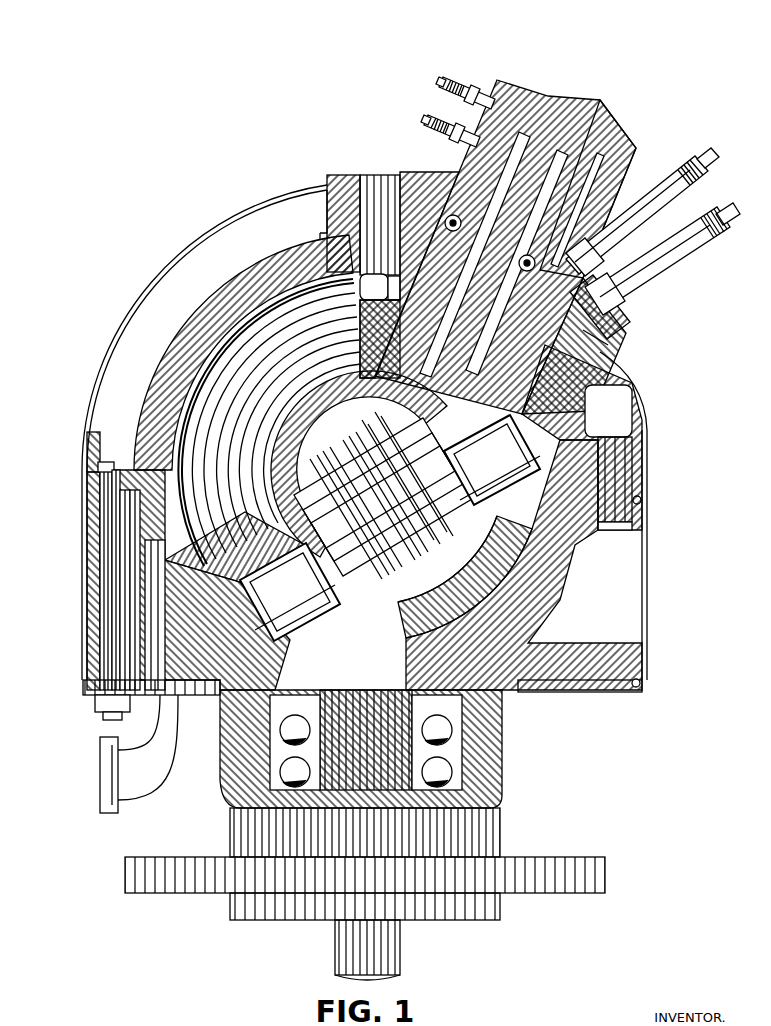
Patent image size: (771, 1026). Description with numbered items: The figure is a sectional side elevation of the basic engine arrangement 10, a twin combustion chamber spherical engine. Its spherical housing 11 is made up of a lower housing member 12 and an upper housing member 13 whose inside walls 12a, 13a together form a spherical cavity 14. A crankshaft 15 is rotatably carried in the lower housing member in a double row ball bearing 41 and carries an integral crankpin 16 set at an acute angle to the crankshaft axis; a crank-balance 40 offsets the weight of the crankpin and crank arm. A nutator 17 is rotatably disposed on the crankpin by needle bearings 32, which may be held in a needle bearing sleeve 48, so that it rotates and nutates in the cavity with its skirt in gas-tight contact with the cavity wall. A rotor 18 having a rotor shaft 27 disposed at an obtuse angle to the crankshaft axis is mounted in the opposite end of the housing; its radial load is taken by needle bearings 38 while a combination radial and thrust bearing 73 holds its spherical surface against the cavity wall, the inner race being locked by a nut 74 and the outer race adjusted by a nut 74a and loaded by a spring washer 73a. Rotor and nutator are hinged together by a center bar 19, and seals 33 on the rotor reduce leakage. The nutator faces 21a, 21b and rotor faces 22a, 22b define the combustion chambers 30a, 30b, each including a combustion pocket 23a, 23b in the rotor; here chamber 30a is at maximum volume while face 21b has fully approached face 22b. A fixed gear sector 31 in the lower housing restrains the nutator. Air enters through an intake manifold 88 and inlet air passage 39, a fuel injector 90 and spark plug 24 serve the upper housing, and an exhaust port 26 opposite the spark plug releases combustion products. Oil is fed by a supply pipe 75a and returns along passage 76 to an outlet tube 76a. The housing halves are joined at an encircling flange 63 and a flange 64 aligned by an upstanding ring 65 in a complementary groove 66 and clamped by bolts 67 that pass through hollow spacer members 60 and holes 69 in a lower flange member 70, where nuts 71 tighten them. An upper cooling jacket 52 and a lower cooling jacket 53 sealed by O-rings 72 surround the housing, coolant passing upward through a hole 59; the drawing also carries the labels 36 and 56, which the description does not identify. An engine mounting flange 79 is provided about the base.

The basic engine arrangement 10 is at (245, 205).
The spherical housing 11 is at (80, 478).
The lower housing member 12 is at (575, 682).
The inside wall of lower housing member 12a is at (520, 542).
The upper housing member 13 is at (105, 368).
The inside wall of upper housing member 13a is at (328, 233).
The spherical cavity 14 is at (112, 510).
The crankshaft 15 is at (598, 178).
The crankpin 16 is at (305, 417).
The nutator 17 is at (540, 518).
The rotor 18 is at (590, 105).
The center bar 19 is at (330, 405).
The nutator face 21a is at (250, 548).
The nutator face 21b is at (500, 478).
The rotor face 22a is at (362, 378).
The rotor face 22b is at (622, 343).
The combustion pocket 23a is at (365, 330).
The combustion pocket 23b is at (592, 416).
The spark plug 24 is at (656, 284).
The exhaust port 26 is at (385, 185).
The rotor shaft 27 is at (540, 100).
The combustion chamber 30a is at (215, 375).
The combustion chamber 30b is at (492, 460).
The fixed gear sector 31 is at (494, 718).
The needle bearings 32 is at (295, 607).
The seals 33 is at (355, 398).
The housing wall 36 is at (500, 576).
The needle bearings 38 is at (392, 170).
The inlet air passage 39 is at (145, 575).
The crank-balance 40 is at (215, 700).
The double row ball bearing 41 is at (255, 772).
The needle bearing sleeve 48 is at (290, 592).
The upper cooling jacket 52 is at (110, 380).
The lower cooling jacket 53 is at (648, 560).
The chamber 56 is at (120, 393).
The hole 59 is at (620, 524).
The hollow spacer members 60 is at (100, 572).
The encircling flange 63 is at (85, 455).
The flange 64 is at (640, 513).
The upstanding ring 65 is at (100, 491).
The complementary groove 66 is at (636, 441).
The bolts 67 is at (108, 542).
The holes 69 is at (642, 684).
The lower flange member 70 is at (562, 692).
The nuts 71 is at (102, 718).
The O-rings 72 is at (641, 497).
The combination radial and thrust bearing 73 is at (628, 302).
The spring washer 73a is at (612, 336).
The nut 74 is at (570, 243).
The nut 74a is at (392, 182).
The supply pipe 75a is at (437, 77).
The return passage 76 is at (560, 108).
The outlet tube 76a is at (422, 117).
The engine mounting flange 79 is at (605, 874).
The intake manifold 88 is at (100, 812).
The fuel injector 90 is at (648, 205).